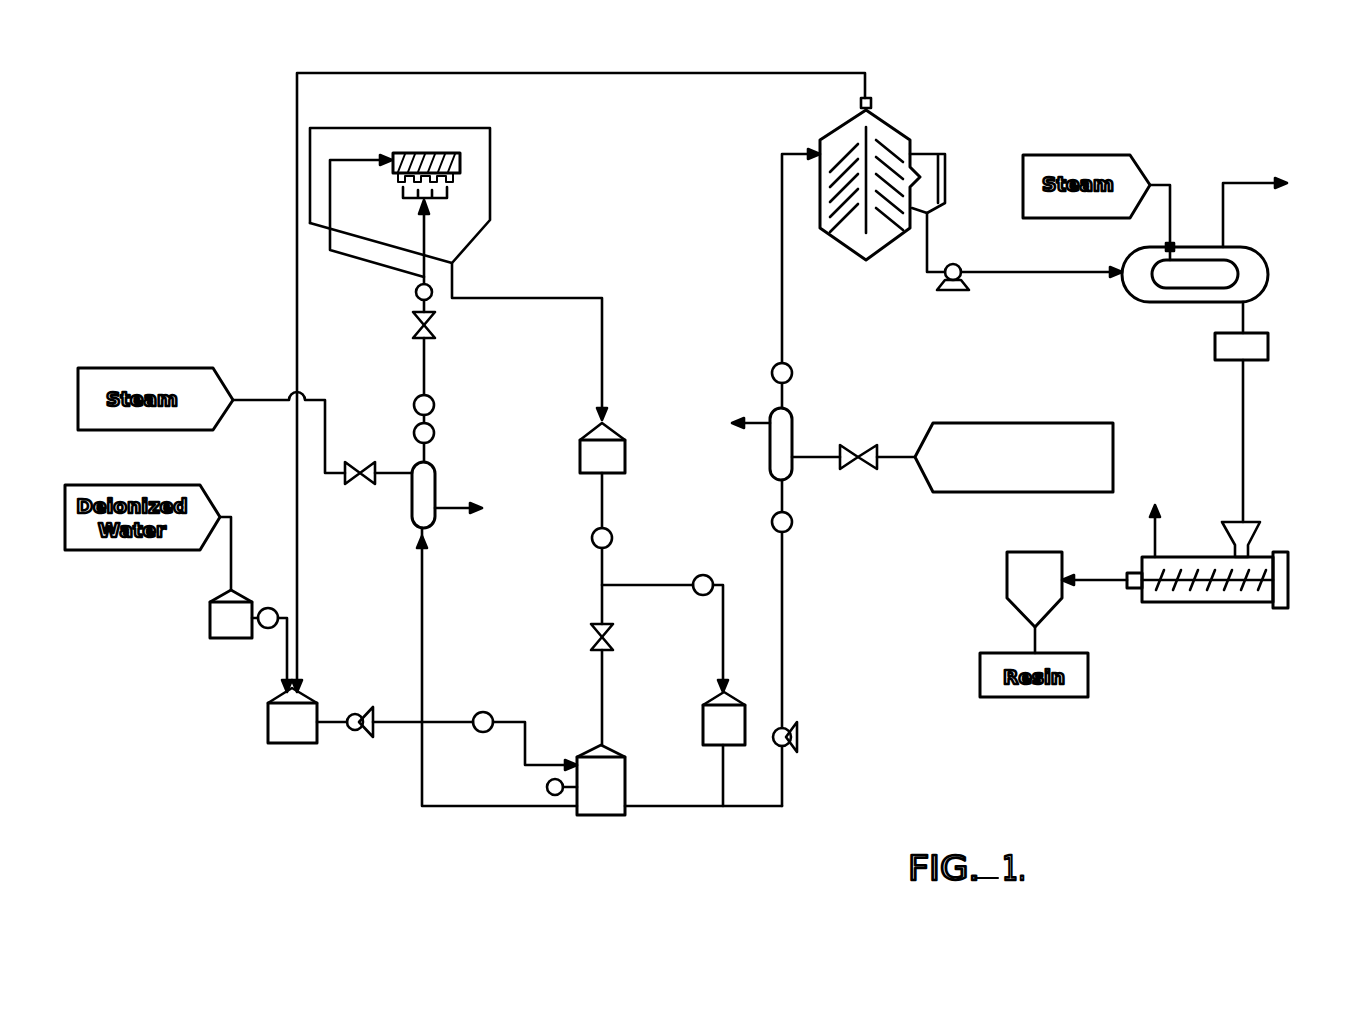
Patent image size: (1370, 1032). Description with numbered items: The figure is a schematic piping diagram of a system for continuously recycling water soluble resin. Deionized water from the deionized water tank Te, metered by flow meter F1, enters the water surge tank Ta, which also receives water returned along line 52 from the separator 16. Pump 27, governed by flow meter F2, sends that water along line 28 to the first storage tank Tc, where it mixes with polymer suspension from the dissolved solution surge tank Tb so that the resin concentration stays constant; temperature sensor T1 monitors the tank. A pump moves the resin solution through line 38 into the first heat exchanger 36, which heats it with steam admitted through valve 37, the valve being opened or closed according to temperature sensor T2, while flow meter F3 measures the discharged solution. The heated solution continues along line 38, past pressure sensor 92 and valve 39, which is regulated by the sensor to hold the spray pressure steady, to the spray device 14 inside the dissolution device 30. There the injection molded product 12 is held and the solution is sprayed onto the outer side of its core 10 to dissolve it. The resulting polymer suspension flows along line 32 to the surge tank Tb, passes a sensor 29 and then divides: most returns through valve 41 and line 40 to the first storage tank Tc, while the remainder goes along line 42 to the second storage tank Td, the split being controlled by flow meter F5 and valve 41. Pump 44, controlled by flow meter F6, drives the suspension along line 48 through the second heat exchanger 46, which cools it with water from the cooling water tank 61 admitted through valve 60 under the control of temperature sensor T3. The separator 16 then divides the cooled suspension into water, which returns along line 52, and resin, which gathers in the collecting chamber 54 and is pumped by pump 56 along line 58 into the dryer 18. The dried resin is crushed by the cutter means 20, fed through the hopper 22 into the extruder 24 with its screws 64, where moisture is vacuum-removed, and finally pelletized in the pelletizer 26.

The core 10 is at (460, 165).
The injection molded product 12 is at (405, 152).
The spray device 14 is at (447, 193).
The separator 16 is at (893, 125).
The dryer 18 is at (1265, 290).
The cutter means 20 is at (1253, 360).
The hopper 22 is at (1258, 538).
The extruder 24 is at (1155, 602).
The pelletizer 26 is at (1017, 577).
The pump 27 is at (355, 732).
The feed line 28 is at (392, 725).
The flow meter 29 is at (610, 531).
The dissolution device 30 is at (490, 130).
The line 32 is at (603, 337).
The first heat exchanger 36 is at (437, 478).
The valve 37 is at (360, 487).
The line 38 is at (425, 370).
The valve 39 is at (430, 322).
The slurry line 40 is at (603, 685).
The valve 41 is at (608, 635).
The branch line 42 is at (723, 652).
The pump 44 is at (797, 737).
The second heat exchanger 46 is at (792, 412).
The line 48 is at (783, 303).
The line 52 is at (750, 75).
The collecting chamber 54 is at (945, 182).
The pump 56 is at (960, 265).
The transfer line 58 is at (1065, 272).
The valve 60 is at (855, 447).
The cooling water tank 61 is at (1028, 423).
The screws 64 is at (1208, 588).
The pressure sensor 92 is at (432, 290).
The flow meter F1 is at (276, 610).
The flow meter F2 is at (483, 712).
The flow meter F3 is at (415, 400).
The flow meter F5 is at (700, 575).
The flow meter F6 is at (792, 522).
The temperature sensor T1 is at (547, 787).
The temperature sensor T2 is at (435, 432).
The temperature sensor T3 is at (792, 370).
The water surge tank Ta is at (268, 728).
The dissolved solution surge tank Tb is at (625, 452).
The first storage tank Tc is at (625, 790).
The second storage tank Td is at (703, 737).
The deionized water tank Te is at (225, 640).